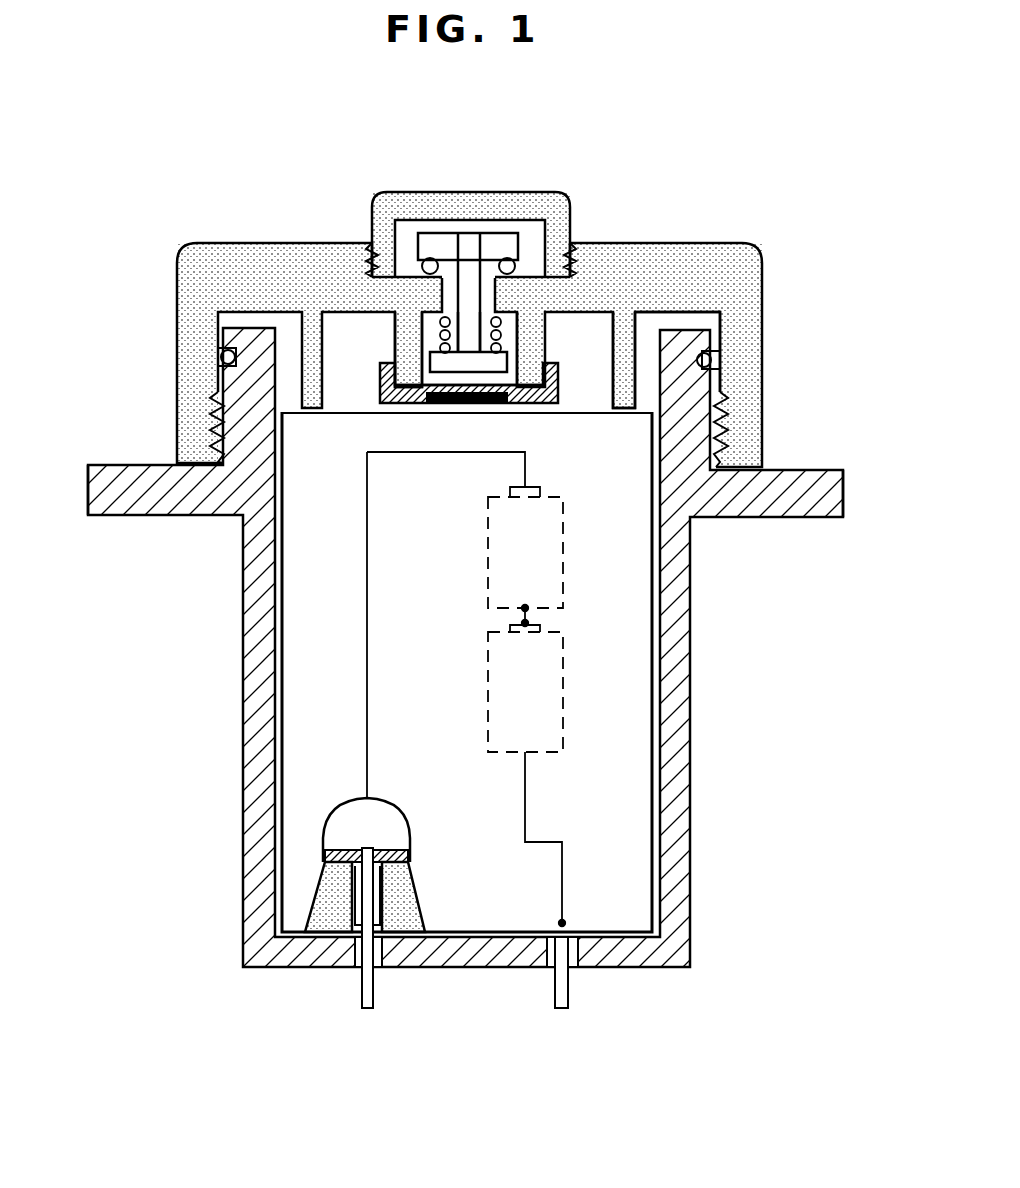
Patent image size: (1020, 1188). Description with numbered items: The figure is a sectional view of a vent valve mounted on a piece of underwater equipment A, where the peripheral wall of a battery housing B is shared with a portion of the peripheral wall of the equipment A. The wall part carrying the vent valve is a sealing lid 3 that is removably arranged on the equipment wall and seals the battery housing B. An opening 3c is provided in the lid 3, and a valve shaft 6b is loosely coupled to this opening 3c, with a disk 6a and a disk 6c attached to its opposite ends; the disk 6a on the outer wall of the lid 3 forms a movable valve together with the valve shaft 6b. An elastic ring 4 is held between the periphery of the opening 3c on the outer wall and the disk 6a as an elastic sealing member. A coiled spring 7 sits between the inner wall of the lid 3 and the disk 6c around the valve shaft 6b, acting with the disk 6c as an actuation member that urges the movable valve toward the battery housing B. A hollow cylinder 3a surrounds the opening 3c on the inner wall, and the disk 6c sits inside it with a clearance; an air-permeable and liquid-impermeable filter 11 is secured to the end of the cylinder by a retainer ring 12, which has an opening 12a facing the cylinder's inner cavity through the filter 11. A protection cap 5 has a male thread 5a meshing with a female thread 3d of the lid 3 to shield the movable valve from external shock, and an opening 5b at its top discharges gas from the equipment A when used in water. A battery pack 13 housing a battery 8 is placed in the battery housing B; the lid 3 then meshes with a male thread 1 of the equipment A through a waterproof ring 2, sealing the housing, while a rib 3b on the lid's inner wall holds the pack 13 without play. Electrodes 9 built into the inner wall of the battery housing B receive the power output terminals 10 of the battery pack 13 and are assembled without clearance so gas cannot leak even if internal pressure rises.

The male thread 1 is at (215, 440).
The waterproof ring 2 is at (221, 357).
The sealing lid 3 is at (192, 306).
The hollow cylinder 3a is at (590, 302).
The rib 3b is at (625, 330).
The opening 3c is at (425, 276).
The female thread 3d is at (370, 258).
The elastic ring 4 is at (395, 238).
The protection cap 5 is at (402, 226).
The male thread 5a is at (530, 330).
The opening 5b is at (466, 232).
The disk 6a is at (472, 280).
The valve shaft 6b is at (486, 292).
The disk 6c is at (440, 362).
The coiled spring 7 is at (498, 322).
The battery 8 is at (560, 665).
The electrodes 9 is at (365, 945).
The power output terminals 10 is at (400, 853).
The air-permeable and liquid-impermeable filter 11 is at (504, 383).
The retainer ring 12 is at (545, 380).
The opening 12a is at (482, 402).
The battery pack 13 is at (628, 712).
The underwater equipment A is at (87, 450).
The battery housing B is at (283, 586).